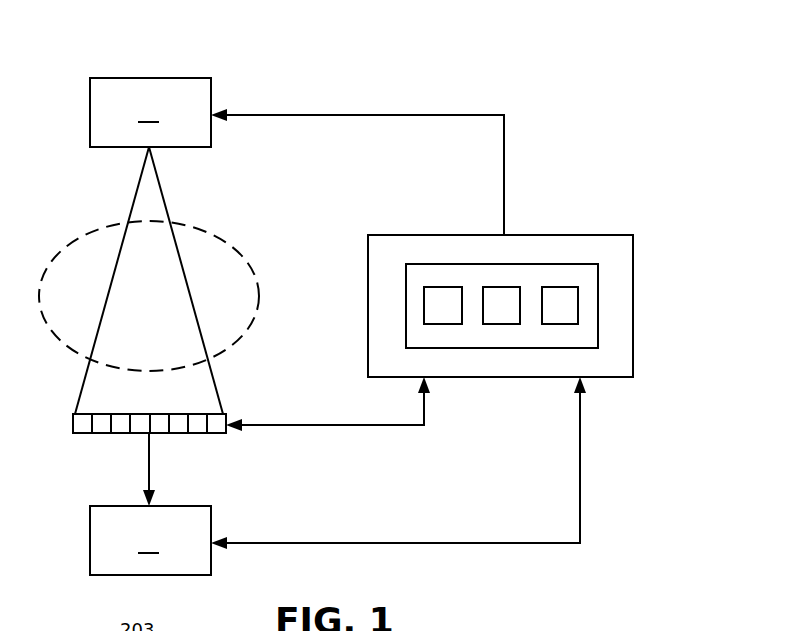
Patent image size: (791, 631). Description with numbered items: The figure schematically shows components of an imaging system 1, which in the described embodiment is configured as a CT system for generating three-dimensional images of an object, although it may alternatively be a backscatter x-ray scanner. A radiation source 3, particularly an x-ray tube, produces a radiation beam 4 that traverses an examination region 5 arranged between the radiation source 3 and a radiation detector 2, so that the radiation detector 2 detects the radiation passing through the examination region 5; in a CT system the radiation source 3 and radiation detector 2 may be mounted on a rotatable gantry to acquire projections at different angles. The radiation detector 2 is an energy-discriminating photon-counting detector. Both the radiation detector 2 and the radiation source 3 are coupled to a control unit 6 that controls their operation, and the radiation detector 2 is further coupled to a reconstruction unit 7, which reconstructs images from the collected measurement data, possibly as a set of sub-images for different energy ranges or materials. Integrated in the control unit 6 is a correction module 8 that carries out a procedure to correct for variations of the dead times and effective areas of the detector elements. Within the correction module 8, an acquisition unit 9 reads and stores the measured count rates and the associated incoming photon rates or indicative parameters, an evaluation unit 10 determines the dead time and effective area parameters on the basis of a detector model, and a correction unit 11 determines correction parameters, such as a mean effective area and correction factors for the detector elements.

The imaging system 1 is at (528, 117).
The radiation detector 2 is at (218, 433).
The radiation source 3 is at (150, 112).
The radiation beam 4 is at (160, 187).
The examination region 5 is at (243, 256).
The control unit 6 is at (633, 343).
The reconstruction unit 7 is at (150, 540).
The correction module 8 is at (598, 289).
The acquisition unit 9 is at (440, 287).
The evaluation unit 10 is at (505, 287).
The correction unit 11 is at (558, 287).